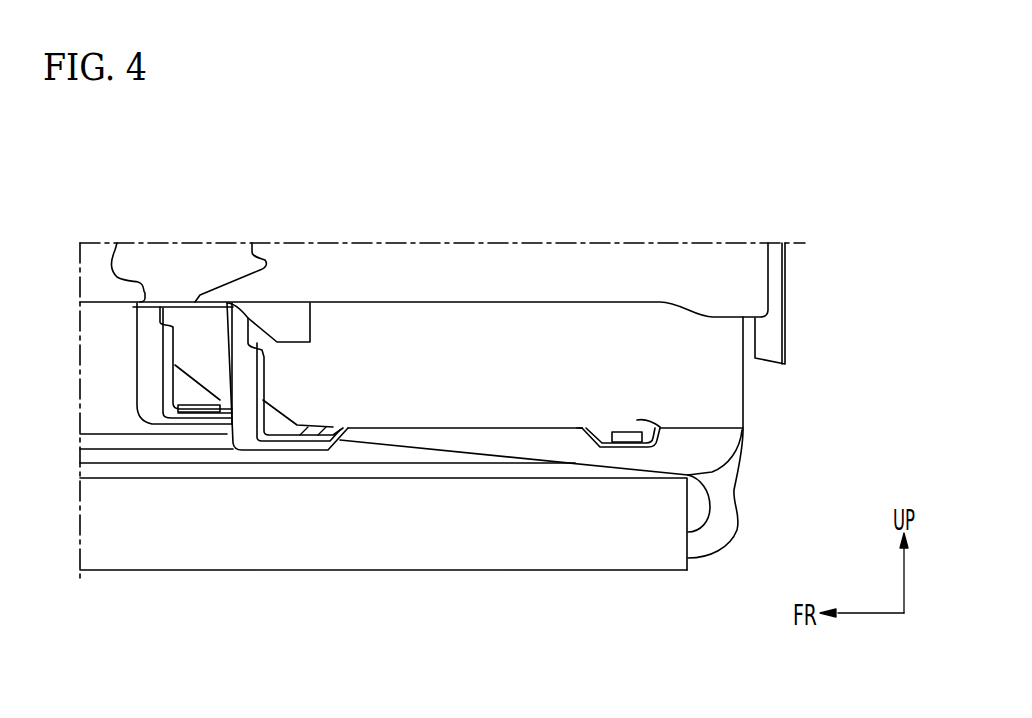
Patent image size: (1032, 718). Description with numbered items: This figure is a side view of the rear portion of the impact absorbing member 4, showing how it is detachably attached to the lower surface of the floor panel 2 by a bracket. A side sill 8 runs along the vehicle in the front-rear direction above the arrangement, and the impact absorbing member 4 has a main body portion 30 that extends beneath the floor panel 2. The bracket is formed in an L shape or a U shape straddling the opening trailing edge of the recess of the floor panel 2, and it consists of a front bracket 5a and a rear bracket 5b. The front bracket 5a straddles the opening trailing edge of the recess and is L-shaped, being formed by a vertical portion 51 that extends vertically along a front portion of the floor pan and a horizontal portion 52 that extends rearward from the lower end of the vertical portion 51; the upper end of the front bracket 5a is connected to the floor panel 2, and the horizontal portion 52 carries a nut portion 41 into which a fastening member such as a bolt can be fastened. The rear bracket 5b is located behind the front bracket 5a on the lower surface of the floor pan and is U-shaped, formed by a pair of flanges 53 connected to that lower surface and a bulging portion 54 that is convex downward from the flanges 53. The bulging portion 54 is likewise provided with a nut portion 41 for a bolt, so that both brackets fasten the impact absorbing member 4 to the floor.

The floor panel 2 is at (538, 302).
The impact absorbing member 4 is at (317, 572).
The front bracket 5a is at (223, 353).
The rear bracket 5b is at (585, 424).
The side sill 8 is at (468, 265).
The main body portion 30 is at (398, 535).
The nut portion 41 is at (197, 407).
The vertical portion 51 is at (245, 422).
The horizontal portion 52 is at (297, 447).
The flange 53 is at (660, 424).
The bulging portion 54 is at (648, 448).